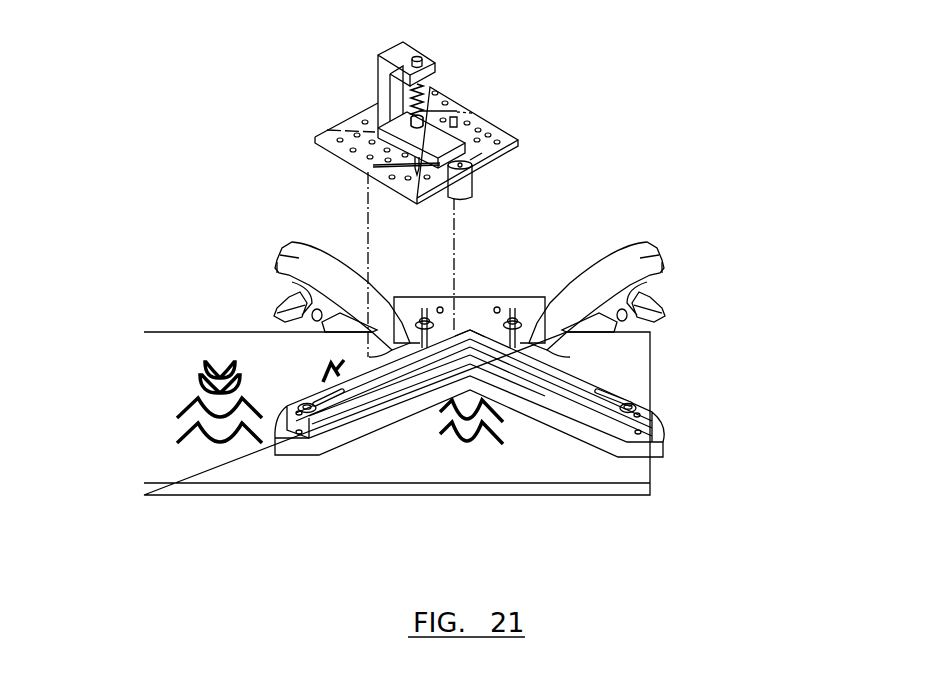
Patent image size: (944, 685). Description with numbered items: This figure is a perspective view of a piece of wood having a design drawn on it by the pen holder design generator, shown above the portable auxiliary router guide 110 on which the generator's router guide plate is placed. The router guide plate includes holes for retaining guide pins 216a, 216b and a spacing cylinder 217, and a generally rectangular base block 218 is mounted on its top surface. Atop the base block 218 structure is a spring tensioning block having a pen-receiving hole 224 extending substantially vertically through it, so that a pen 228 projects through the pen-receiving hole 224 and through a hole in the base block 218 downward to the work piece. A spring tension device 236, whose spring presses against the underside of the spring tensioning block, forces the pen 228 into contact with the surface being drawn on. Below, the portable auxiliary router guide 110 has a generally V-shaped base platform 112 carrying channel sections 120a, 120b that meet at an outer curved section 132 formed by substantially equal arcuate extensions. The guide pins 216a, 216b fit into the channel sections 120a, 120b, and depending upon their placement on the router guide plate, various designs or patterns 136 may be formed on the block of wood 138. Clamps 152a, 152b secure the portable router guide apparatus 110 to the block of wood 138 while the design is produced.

The portable auxiliary router guide 110 is at (667, 422).
The base platform 112 is at (525, 350).
The channel section 120a is at (390, 398).
The channel section 120b is at (530, 387).
The outer curved section 132 is at (470, 333).
The designs or patterns 136 is at (194, 400).
The block of wood 138 is at (168, 463).
The clamp 152a is at (298, 255).
The clamp 152b is at (648, 255).
The guide pin 216a is at (372, 167).
The guide pin 216b is at (463, 127).
The spacing cylinder 217 is at (472, 185).
The base block 218 is at (482, 153).
The pen-receiving hole 224 is at (437, 63).
The pen 228 is at (420, 57).
The spring tension device 236 is at (457, 110).